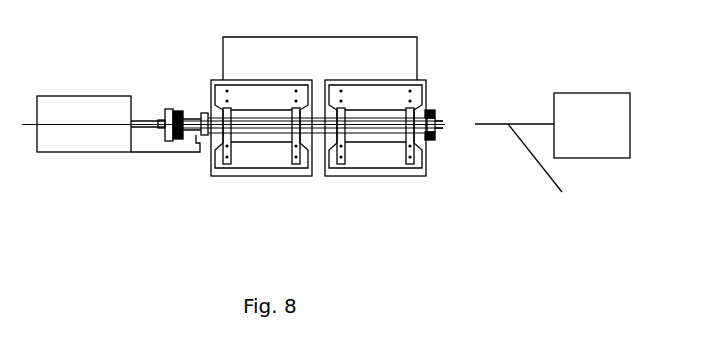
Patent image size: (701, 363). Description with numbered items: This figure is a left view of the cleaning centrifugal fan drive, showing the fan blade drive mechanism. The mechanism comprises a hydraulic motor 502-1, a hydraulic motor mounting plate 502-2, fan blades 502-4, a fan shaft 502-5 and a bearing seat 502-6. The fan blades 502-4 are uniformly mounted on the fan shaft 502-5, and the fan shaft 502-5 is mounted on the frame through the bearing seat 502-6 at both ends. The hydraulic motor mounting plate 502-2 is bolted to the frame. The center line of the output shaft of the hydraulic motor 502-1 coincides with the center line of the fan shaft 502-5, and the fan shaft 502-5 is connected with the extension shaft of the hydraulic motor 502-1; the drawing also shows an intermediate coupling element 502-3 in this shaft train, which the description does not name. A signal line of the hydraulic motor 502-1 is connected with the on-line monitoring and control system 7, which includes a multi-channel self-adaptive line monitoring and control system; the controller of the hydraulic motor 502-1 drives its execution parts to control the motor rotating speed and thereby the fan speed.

The hydraulic motor 502-1 is at (52, 140).
The hydraulic motor mounting plate 502-2 is at (118, 152).
The coupling 502-3 is at (177, 140).
The fan blades 502-4 is at (247, 148).
The fan shaft 502-5 is at (325, 135).
The bearing seat 502-6 is at (430, 140).
The on-line monitoring and control system 7 is at (552, 152).